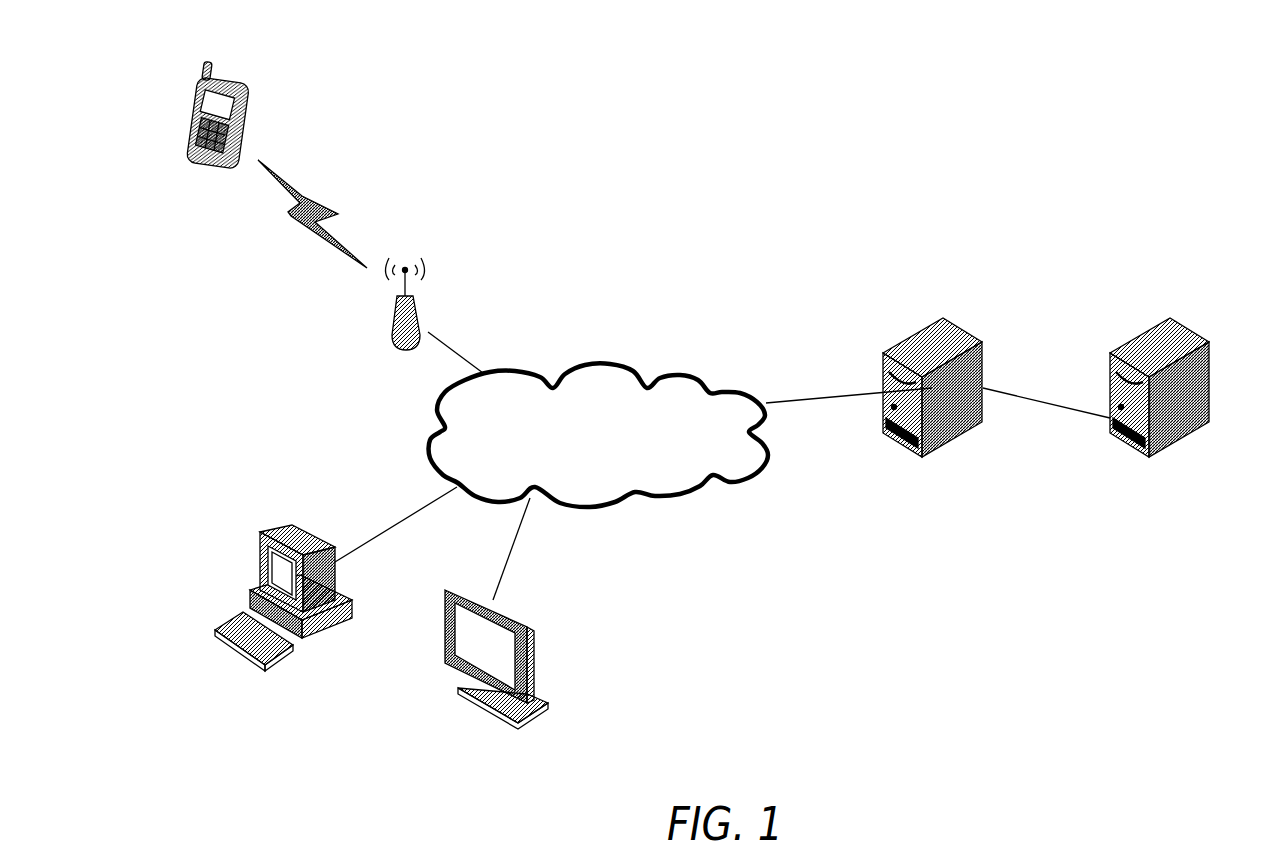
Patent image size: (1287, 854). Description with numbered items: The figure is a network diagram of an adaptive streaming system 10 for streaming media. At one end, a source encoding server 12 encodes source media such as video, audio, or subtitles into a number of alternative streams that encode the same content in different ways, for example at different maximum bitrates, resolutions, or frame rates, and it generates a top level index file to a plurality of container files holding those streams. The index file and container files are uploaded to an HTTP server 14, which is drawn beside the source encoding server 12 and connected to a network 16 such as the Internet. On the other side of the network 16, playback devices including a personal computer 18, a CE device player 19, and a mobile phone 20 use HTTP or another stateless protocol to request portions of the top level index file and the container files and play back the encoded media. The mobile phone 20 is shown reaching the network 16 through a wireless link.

The adaptive streaming system 10 is at (749, 204).
The source encoding server 12 is at (1180, 318).
The HTTP server 14 is at (950, 337).
The network 16 is at (632, 495).
The personal computer 18 is at (237, 657).
The CE device player 19 is at (458, 670).
The mobile phone 20 is at (235, 90).